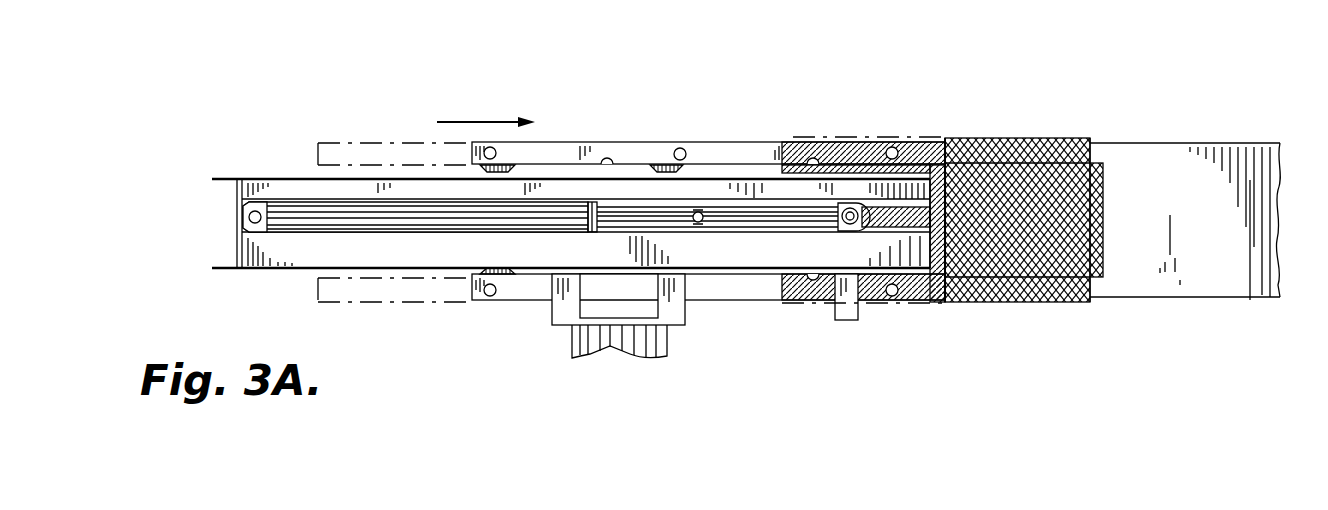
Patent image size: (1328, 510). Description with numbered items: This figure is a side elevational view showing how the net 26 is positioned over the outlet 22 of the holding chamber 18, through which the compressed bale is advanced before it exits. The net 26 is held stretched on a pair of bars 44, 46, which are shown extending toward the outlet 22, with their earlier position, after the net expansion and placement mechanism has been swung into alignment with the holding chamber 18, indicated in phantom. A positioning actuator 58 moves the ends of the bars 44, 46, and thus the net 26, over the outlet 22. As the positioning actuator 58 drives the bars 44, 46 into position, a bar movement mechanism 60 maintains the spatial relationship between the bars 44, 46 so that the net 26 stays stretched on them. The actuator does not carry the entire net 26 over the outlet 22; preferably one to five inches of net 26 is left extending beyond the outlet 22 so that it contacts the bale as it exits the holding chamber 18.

The holding chamber 18 is at (1227, 155).
The outlet 22 is at (963, 140).
The net 26 is at (1087, 182).
The bar 44 is at (723, 147).
The bar 46 is at (720, 293).
The positioning actuator 58 is at (302, 210).
The bar movement mechanism 60 is at (595, 92).